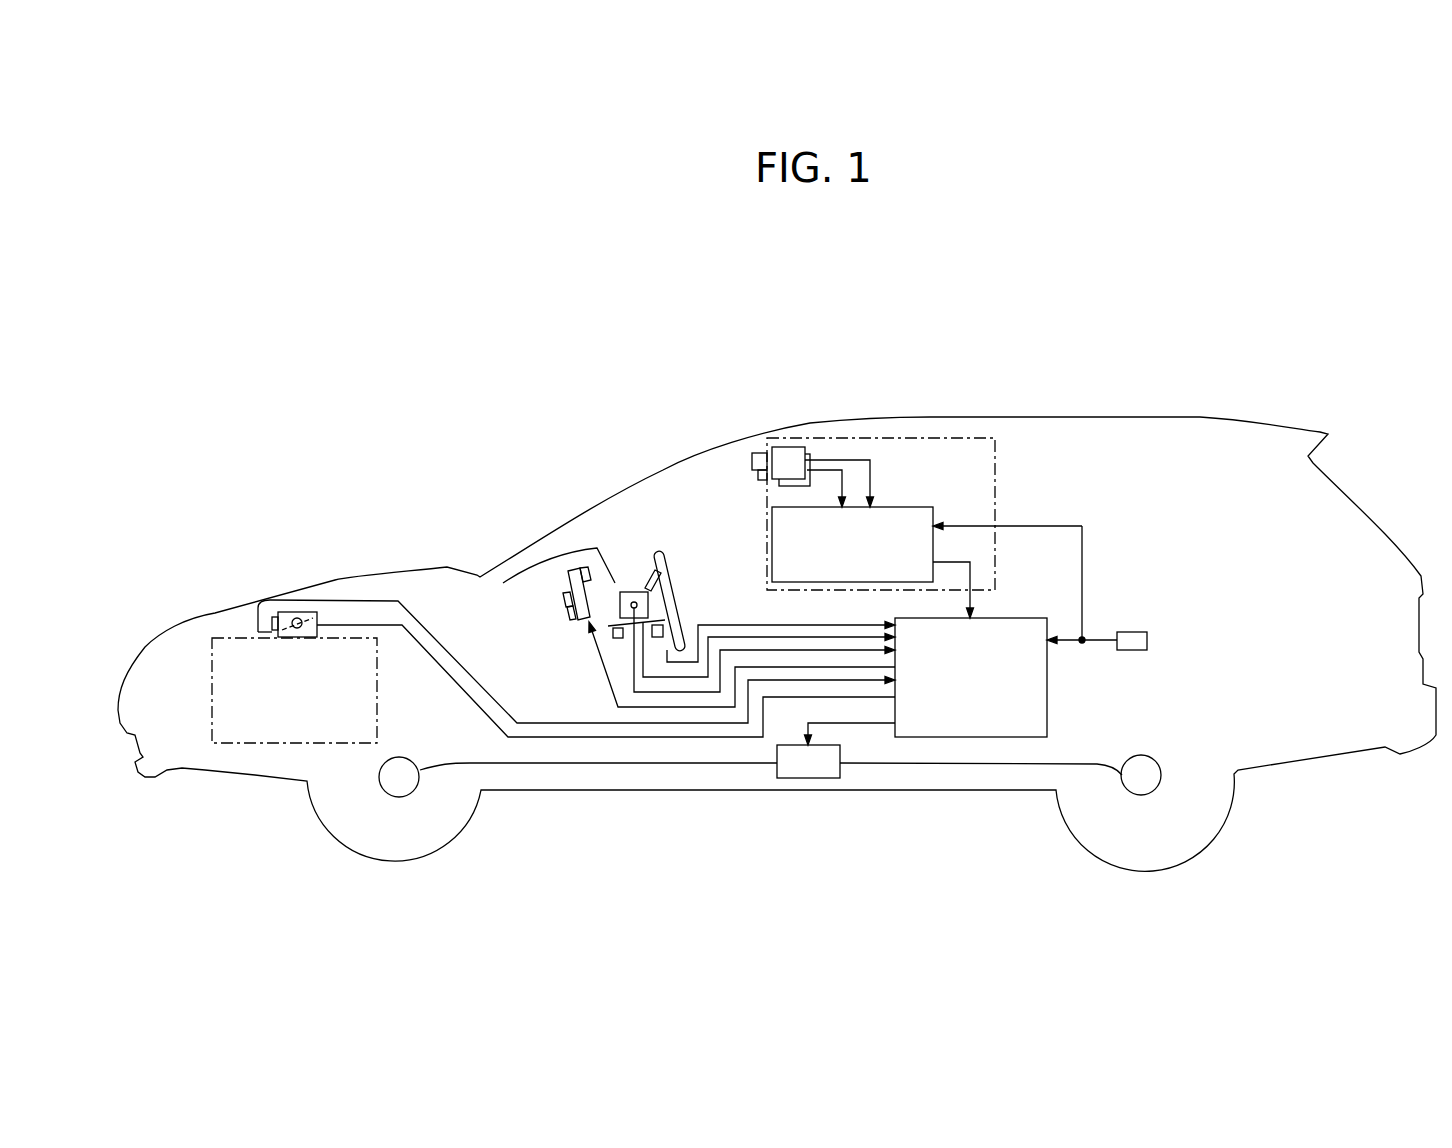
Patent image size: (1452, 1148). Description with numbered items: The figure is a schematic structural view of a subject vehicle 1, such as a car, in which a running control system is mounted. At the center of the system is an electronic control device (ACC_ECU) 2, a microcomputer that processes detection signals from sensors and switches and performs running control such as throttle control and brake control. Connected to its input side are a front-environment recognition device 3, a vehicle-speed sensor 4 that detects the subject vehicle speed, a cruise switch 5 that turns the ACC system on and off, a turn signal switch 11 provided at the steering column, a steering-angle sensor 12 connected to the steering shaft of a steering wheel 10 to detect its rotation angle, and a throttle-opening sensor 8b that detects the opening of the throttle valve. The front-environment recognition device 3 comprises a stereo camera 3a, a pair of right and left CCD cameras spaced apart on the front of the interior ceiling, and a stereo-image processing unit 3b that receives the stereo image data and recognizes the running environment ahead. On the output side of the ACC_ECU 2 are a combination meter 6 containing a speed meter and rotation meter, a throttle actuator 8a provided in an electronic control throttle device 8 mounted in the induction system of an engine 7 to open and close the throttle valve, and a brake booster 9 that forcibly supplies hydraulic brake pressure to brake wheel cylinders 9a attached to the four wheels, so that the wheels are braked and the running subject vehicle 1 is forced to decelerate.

The subject vehicle 1 is at (1135, 394).
The electronic control device (ACC_ECU) 2 is at (1007, 618).
The front-environment recognition device 3 is at (914, 429).
The stereo camera 3a is at (783, 457).
The stereo-image processing unit 3b is at (893, 508).
The vehicle-speed sensor 4 is at (1147, 640).
The cruise switch 5 is at (634, 602).
The combination meter 6 is at (578, 570).
The engine 7 is at (378, 689).
The electronic control throttle device 8 is at (283, 600).
The throttle actuator 8a is at (300, 621).
The throttle-opening sensor 8b is at (262, 632).
The brake booster 9 is at (795, 745).
The brake wheel cylinders 9a is at (399, 797).
The steering wheel 10 is at (665, 570).
The turn signal switch 11 is at (653, 632).
The steering-angle sensor 12 is at (614, 636).